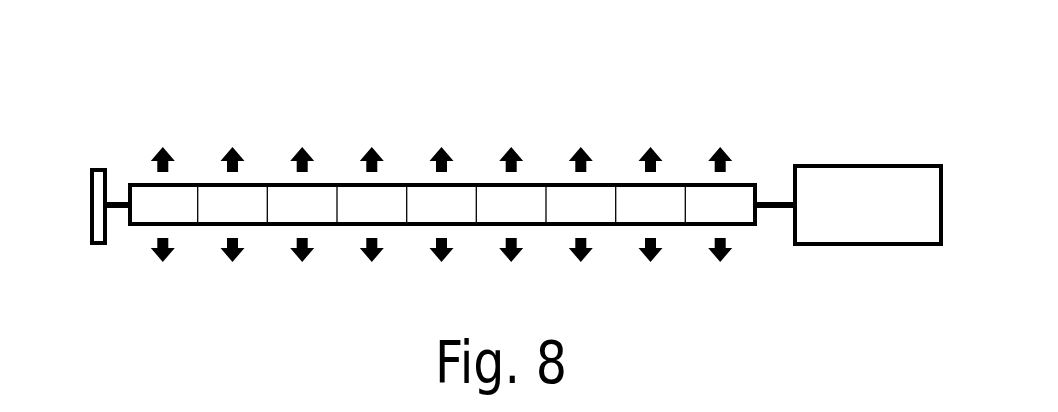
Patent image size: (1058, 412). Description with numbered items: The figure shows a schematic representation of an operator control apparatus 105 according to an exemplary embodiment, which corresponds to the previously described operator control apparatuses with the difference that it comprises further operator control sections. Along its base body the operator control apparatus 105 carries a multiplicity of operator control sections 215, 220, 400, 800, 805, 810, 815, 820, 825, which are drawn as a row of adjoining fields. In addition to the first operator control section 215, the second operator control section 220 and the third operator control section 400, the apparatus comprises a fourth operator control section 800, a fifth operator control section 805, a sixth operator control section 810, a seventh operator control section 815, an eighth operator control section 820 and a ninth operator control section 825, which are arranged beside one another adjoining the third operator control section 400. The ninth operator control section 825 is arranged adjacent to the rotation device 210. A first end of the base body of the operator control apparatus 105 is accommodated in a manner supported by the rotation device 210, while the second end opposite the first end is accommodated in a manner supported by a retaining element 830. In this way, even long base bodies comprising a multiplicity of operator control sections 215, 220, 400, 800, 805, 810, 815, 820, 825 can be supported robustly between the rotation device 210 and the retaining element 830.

The operator control apparatus 105 is at (195, 74).
The retaining element 830 is at (89, 175).
The rotation device 210 is at (820, 185).
The first operator control section 215 is at (163, 204).
The second operator control section 220 is at (227, 204).
The third operator control section 400 is at (296, 204).
The fourth operator control section 800 is at (366, 204).
The fifth operator control section 805 is at (436, 204).
The sixth operator control section 810 is at (505, 204).
The seventh operator control section 815 is at (575, 204).
The eighth operator control section 820 is at (645, 204).
The ninth operator control section 825 is at (714, 204).